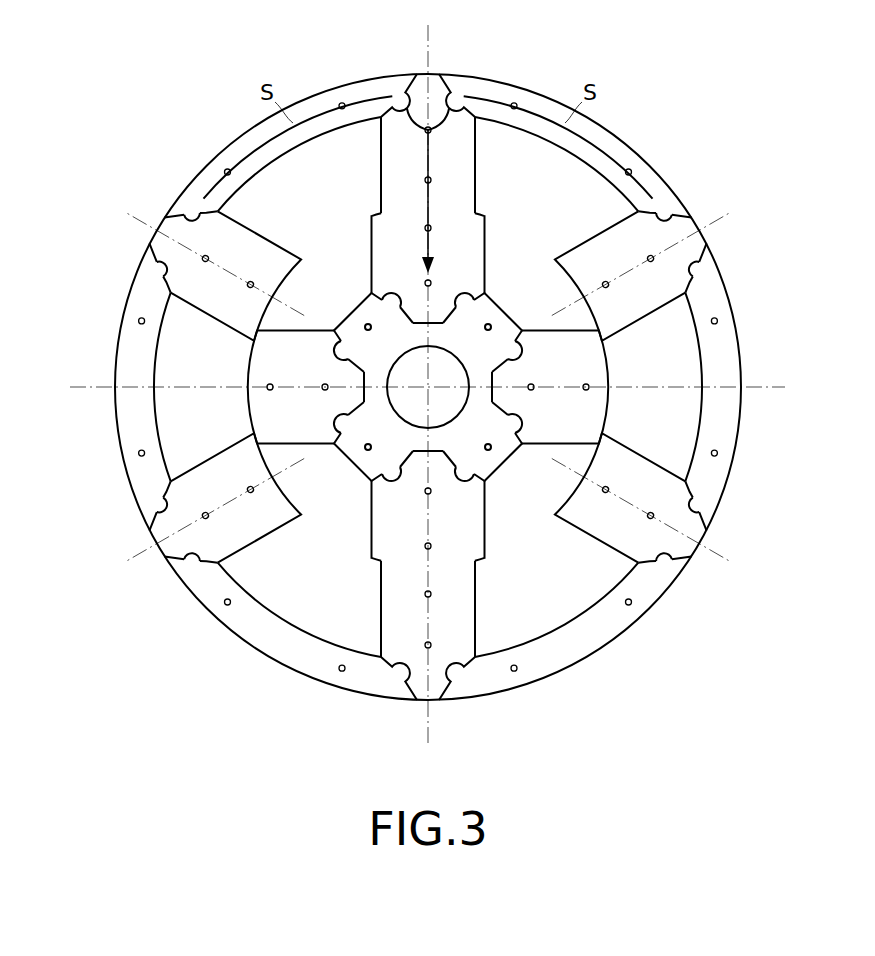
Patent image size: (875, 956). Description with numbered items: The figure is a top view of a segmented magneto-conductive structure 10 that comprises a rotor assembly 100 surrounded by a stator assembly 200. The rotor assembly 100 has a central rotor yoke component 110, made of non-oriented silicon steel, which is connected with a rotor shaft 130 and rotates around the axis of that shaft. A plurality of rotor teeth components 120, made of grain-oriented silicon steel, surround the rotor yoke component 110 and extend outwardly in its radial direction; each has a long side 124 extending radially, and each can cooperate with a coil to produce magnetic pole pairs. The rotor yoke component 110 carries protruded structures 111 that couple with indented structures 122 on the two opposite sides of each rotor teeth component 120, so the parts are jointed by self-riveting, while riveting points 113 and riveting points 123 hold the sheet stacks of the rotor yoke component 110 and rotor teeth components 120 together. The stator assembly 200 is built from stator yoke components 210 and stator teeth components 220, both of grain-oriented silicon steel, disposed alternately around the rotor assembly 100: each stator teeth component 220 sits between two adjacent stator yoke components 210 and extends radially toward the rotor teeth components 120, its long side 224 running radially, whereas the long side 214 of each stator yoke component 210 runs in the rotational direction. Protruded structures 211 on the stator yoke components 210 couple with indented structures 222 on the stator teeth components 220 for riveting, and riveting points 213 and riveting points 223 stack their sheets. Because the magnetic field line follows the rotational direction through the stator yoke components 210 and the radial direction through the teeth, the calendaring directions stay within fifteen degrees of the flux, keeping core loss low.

The segmented magneto-conductive structure 10 is at (798, 87).
The rotor assembly 100 is at (503, 548).
The rotor yoke component 110 is at (502, 488).
The protruded structure 111 is at (338, 416).
The riveting point 113 is at (374, 446).
The rotor teeth component 120 is at (501, 229).
The indented structure 122 is at (349, 428).
The riveting point 123 is at (432, 546).
The long side 124 is at (372, 240).
The rotor shaft 130 is at (455, 352).
The stator assembly 200 is at (679, 612).
The stator yoke component 210 is at (311, 80).
The protruded structure 211 is at (688, 222).
The riveting point 213 is at (718, 453).
The long side 214 is at (250, 123).
The stator teeth component 220 is at (491, 186).
The indented structure 222 is at (660, 207).
The riveting point 223 is at (605, 280).
The long side 224 is at (380, 170).